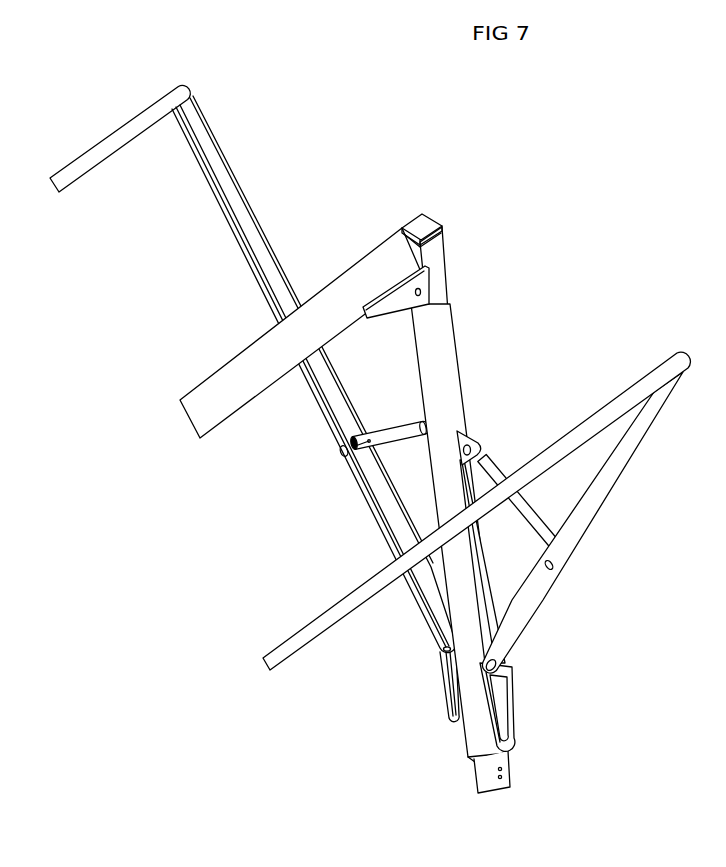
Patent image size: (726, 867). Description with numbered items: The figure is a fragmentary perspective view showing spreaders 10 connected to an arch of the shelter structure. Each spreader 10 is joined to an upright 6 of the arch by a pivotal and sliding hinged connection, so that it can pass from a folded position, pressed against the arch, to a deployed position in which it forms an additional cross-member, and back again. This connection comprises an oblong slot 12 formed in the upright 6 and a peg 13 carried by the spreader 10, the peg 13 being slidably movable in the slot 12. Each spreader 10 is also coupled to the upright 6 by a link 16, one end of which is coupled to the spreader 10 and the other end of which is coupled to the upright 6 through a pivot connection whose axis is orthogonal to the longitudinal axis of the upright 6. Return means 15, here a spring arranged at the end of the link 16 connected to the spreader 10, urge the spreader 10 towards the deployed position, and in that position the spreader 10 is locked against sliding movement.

The upright 6 is at (443, 340).
The spreader 10 is at (600, 486).
The oblong slot 12 is at (513, 740).
The peg 13 is at (505, 690).
The return means 15 is at (352, 452).
The link 16 is at (487, 452).